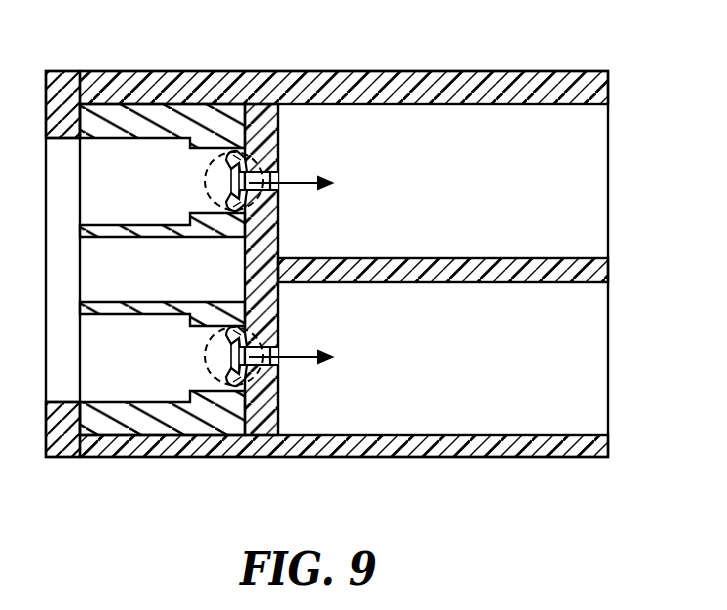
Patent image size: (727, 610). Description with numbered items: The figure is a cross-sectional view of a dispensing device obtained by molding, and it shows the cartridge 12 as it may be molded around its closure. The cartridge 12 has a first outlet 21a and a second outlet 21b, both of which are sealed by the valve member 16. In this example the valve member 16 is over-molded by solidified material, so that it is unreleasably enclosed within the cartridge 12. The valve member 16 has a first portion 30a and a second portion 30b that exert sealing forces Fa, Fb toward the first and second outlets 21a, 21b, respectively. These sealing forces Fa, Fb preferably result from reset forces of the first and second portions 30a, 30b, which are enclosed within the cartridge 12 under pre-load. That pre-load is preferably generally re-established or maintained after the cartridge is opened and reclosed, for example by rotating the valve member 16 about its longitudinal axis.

The cartridge 12 is at (504, 92).
The valve member 16 is at (175, 126).
The first outlet 21a is at (272, 176).
The second outlet 21b is at (275, 376).
The first portion 30a is at (262, 165).
The second portion 30b is at (258, 372).
The sealing force Fa is at (307, 185).
The sealing force Fb is at (308, 359).